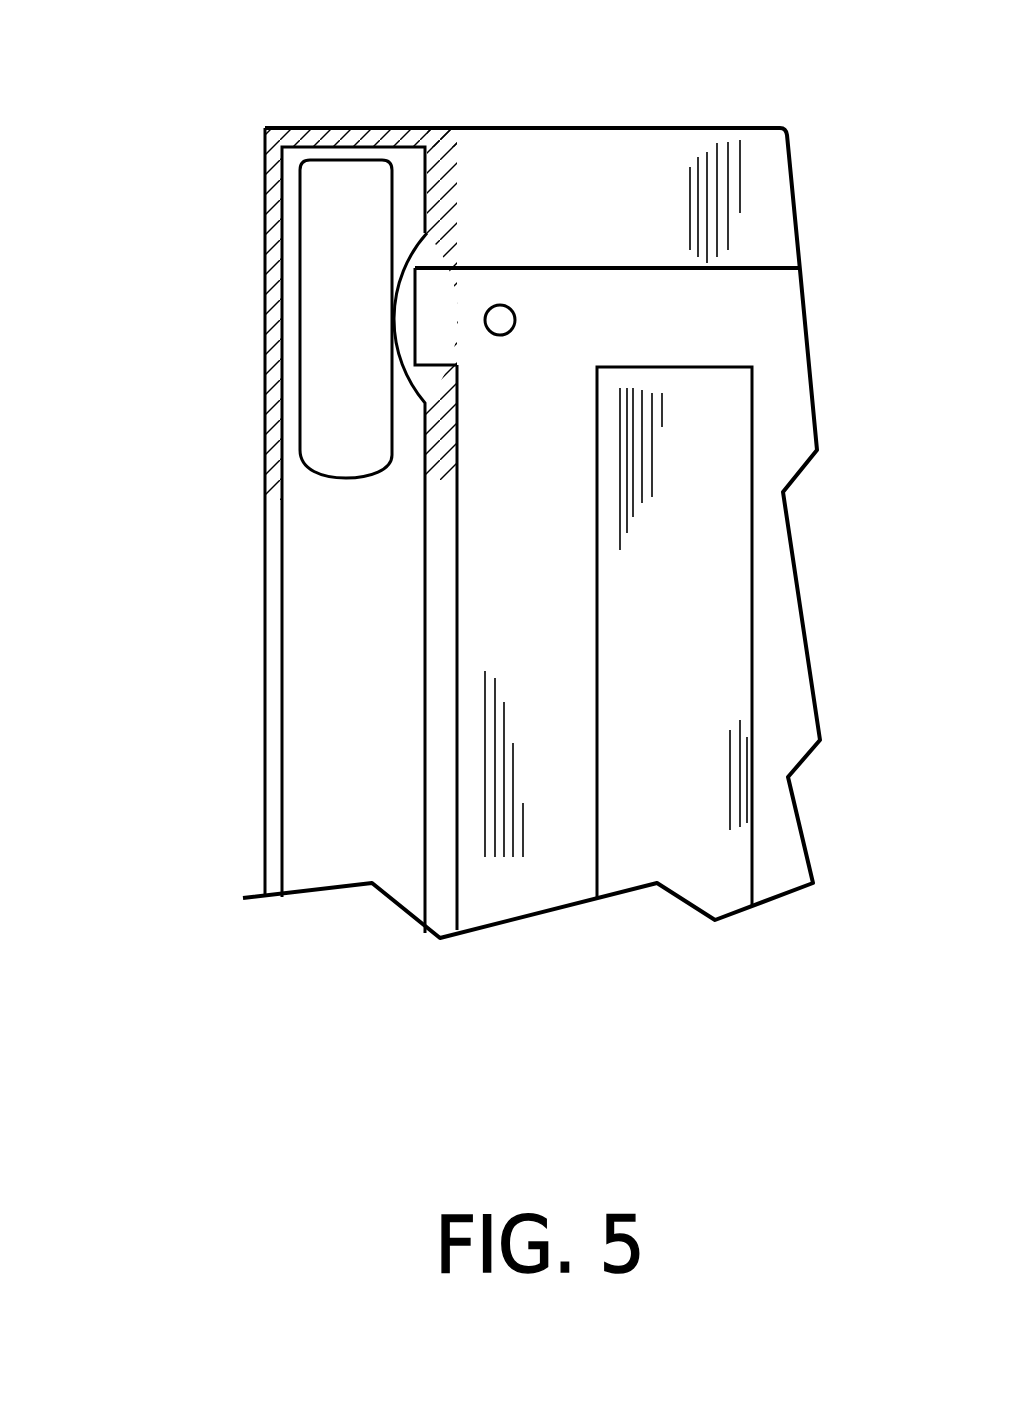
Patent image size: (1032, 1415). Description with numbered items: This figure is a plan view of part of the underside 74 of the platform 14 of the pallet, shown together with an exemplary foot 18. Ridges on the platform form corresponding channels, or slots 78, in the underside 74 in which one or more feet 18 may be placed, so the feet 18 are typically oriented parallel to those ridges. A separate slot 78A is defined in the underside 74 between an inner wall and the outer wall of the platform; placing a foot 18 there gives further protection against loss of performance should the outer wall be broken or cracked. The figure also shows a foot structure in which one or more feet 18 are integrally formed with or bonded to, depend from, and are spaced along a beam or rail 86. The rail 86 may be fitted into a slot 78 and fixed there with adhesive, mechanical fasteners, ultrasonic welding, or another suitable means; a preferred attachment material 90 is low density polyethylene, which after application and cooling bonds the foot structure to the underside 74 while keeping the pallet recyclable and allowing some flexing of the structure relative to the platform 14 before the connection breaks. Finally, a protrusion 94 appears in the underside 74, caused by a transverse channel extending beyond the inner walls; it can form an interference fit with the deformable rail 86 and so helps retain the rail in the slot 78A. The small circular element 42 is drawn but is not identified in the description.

The platform 14 is at (205, 655).
The foot 18 is at (325, 222).
The pin 42 is at (510, 306).
The underside 74 is at (817, 338).
The slot 78 is at (703, 880).
The slot defined by inner wall and outer wall 78A is at (442, 898).
The rail 86 is at (315, 725).
The attachment material 90 is at (263, 300).
The protrusion 94 is at (452, 307).